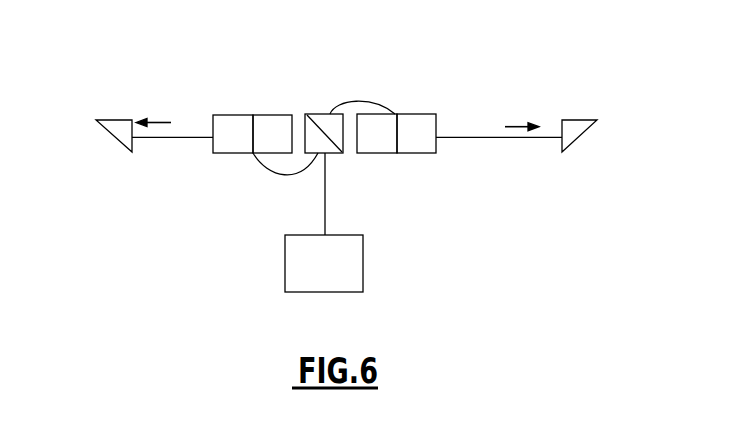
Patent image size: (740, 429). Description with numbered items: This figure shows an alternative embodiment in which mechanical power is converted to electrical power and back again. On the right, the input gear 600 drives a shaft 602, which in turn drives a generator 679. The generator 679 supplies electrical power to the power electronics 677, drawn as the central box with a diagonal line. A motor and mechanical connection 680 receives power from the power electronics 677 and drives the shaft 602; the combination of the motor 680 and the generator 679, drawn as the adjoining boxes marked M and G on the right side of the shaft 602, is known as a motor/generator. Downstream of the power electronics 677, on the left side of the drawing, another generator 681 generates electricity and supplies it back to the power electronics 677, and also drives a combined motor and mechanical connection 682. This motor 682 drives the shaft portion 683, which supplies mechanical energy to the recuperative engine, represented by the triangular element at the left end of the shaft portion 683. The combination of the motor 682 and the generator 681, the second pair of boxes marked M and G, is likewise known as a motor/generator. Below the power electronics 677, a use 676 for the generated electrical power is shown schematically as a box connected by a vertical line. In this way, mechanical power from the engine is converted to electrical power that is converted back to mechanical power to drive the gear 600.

The input gear 600 is at (570, 132).
The shaft 602 is at (458, 138).
The use for generated electrical power 676 is at (285, 270).
The power electronics 677 is at (341, 140).
The generator 679 is at (418, 114).
The motor and mechanical connection 680 is at (370, 153).
The generator 681 is at (272, 115).
The combined motor and mechanical connection 682 is at (218, 115).
The shaft portion 683 is at (177, 138).